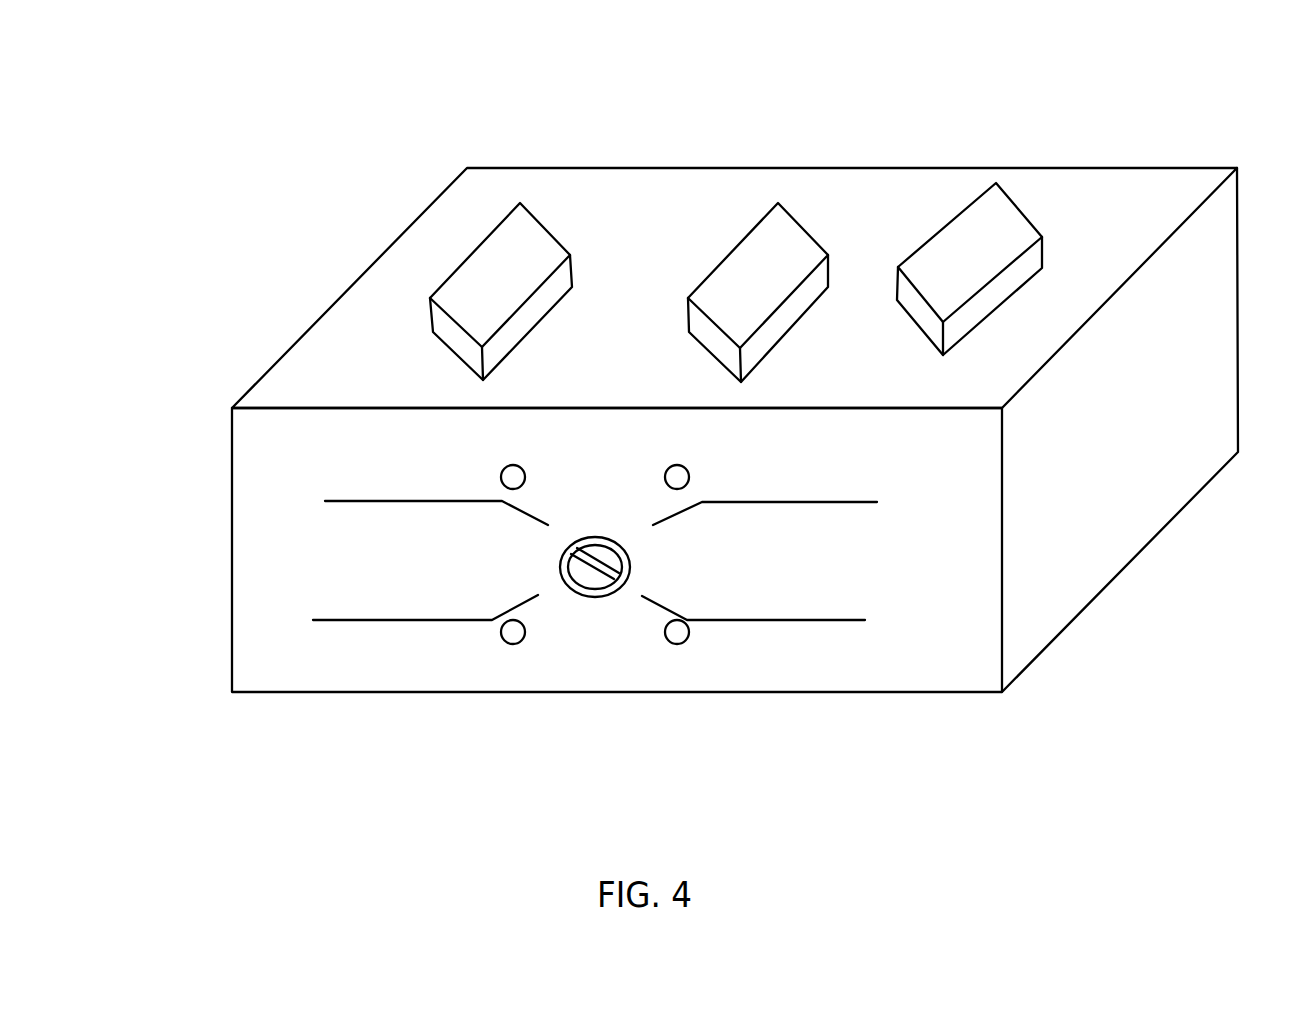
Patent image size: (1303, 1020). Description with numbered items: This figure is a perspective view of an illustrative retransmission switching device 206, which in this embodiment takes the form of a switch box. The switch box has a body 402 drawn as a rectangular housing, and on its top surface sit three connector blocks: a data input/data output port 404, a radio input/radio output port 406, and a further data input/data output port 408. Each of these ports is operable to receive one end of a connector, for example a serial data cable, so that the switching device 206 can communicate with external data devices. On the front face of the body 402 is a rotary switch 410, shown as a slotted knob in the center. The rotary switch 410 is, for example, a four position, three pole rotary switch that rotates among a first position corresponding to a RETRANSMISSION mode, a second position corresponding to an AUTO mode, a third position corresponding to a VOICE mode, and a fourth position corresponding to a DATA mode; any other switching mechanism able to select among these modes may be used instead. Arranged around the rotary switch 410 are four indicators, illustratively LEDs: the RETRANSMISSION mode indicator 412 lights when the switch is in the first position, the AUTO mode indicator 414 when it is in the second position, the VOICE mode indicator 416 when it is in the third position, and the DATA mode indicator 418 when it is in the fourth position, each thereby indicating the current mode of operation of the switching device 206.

The retransmission switching device 206 is at (316, 253).
The body 402 is at (1182, 167).
The data input/data output port 404 is at (512, 238).
The radio input/radio output port 406 is at (782, 240).
The data input/data output port 408 is at (982, 227).
The rotary switch 410 is at (583, 597).
The RETRANSMISSION mode indicator 412 is at (501, 642).
The AUTO mode indicator 414 is at (490, 465).
The VOICE mode indicator 416 is at (690, 465).
The DATA mode indicator 418 is at (690, 643).